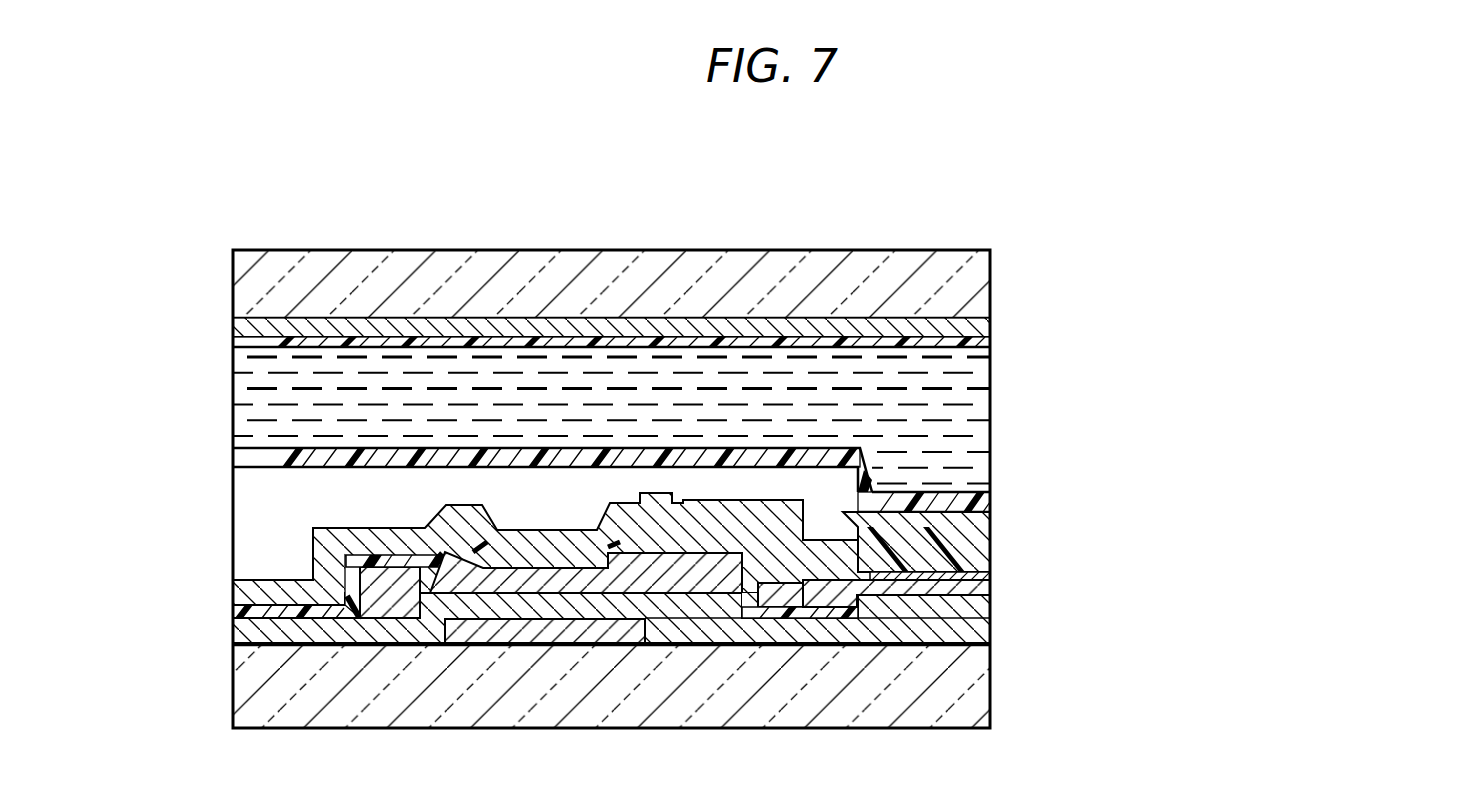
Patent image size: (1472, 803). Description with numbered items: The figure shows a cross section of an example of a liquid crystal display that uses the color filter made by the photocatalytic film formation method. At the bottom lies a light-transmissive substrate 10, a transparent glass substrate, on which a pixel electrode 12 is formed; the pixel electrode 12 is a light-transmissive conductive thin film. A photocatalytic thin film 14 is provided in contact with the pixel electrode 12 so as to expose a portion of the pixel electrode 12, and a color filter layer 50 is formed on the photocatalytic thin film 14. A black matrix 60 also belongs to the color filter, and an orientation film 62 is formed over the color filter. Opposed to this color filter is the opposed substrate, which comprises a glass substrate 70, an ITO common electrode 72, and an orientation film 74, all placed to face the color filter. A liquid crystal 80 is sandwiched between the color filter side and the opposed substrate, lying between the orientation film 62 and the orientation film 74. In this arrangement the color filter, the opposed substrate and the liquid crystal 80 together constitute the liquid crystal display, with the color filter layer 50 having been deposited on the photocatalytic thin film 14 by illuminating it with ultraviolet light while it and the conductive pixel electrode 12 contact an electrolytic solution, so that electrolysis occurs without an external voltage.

The black matrix 60 is at (258, 498).
The glass substrate 70 is at (992, 284).
The ITO common electrode 72 is at (992, 328).
The orientation film 74 is at (992, 342).
The liquid crystal 80 is at (958, 458).
The orientation film 62 is at (992, 502).
The color filter layer 50 is at (992, 538).
The photocatalytic thin film 14 is at (992, 572).
The pixel electrode 12 is at (992, 597).
The light-transmissive substrate 10 is at (992, 693).